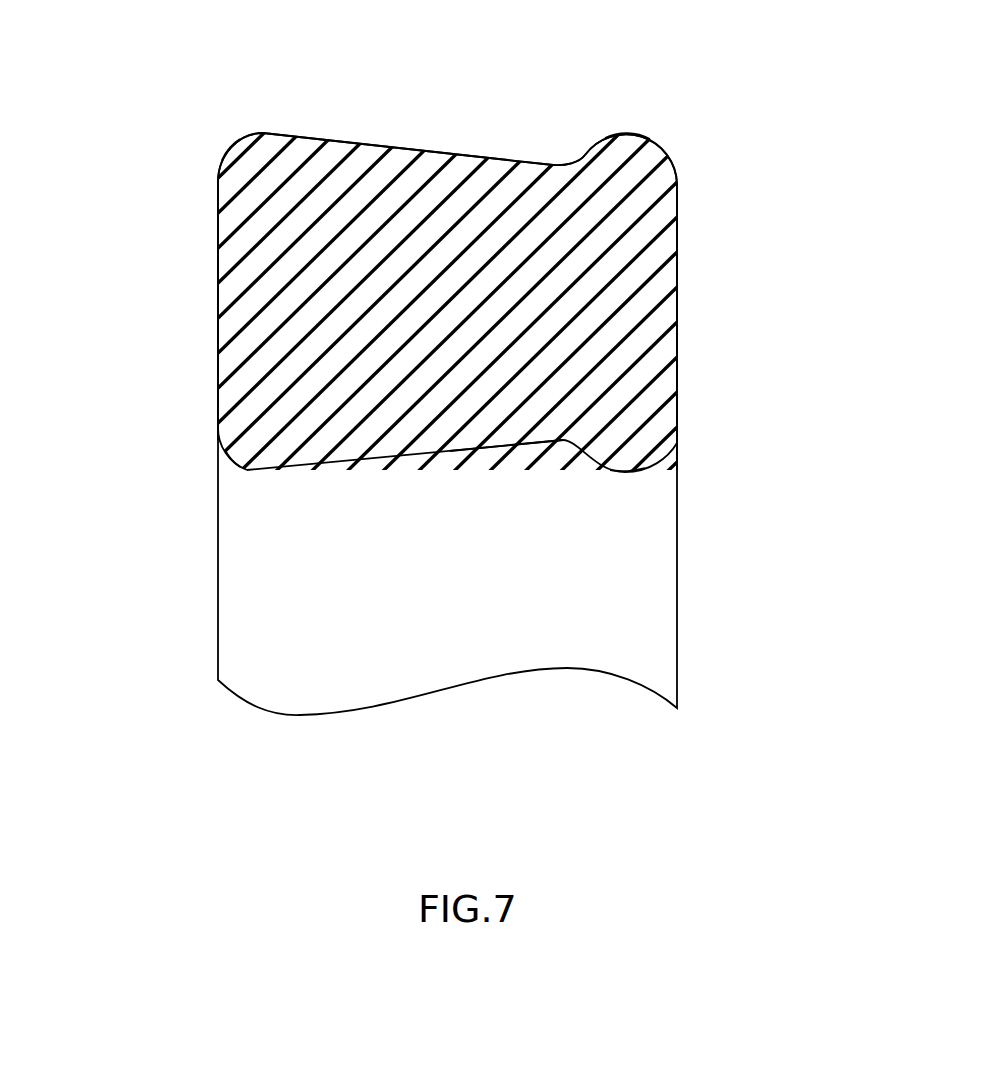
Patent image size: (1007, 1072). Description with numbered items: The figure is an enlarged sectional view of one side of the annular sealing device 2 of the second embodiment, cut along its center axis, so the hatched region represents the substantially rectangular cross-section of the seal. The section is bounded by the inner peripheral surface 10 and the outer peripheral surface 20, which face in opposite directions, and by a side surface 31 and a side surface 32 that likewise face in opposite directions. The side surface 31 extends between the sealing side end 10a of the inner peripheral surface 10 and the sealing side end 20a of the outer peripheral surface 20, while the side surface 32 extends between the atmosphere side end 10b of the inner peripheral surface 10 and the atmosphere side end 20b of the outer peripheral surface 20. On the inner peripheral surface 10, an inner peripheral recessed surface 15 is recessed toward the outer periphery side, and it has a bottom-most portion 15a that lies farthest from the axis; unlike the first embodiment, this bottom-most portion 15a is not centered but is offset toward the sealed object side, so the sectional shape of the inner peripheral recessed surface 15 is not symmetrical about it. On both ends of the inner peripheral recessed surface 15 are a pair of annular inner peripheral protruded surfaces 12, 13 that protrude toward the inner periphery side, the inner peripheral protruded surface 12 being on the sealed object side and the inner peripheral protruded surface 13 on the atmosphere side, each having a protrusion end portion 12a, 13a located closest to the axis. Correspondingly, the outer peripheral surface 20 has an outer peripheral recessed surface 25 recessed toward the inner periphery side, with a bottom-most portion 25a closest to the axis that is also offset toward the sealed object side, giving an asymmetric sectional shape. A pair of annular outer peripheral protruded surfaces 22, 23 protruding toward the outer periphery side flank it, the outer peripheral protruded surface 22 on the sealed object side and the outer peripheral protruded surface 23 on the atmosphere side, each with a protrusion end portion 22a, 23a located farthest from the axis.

The sealing device 2 is at (478, 800).
The inner peripheral surface 10 is at (378, 472).
The sealing side end 10a is at (677, 430).
The atmosphere side end 10b is at (218, 427).
The inner peripheral protruded surface 12 is at (666, 479).
The protrusion end portion 12a is at (632, 472).
The inner peripheral protruded surface 13 is at (215, 464).
The protrusion end portion 13a is at (235, 463).
The inner peripheral recessed surface 15 is at (512, 452).
The bottom-most portion 15a is at (564, 445).
The outer peripheral surface 20 is at (386, 138).
The sealing side end 20a is at (677, 184).
The atmosphere side end 20b is at (218, 182).
The outer peripheral protruded surface 22 is at (658, 132).
The protrusion end portion 22a is at (640, 135).
The outer peripheral protruded surface 23 is at (217, 144).
The protrusion end portion 23a is at (227, 143).
The outer peripheral recessed surface 25 is at (518, 152).
The bottom-most portion 25a is at (564, 165).
The side surface 31 is at (677, 307).
The side surface 32 is at (218, 308).